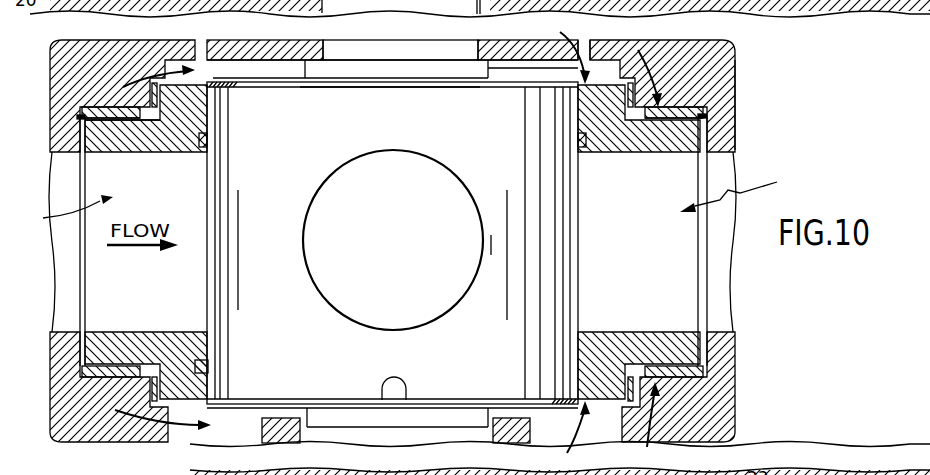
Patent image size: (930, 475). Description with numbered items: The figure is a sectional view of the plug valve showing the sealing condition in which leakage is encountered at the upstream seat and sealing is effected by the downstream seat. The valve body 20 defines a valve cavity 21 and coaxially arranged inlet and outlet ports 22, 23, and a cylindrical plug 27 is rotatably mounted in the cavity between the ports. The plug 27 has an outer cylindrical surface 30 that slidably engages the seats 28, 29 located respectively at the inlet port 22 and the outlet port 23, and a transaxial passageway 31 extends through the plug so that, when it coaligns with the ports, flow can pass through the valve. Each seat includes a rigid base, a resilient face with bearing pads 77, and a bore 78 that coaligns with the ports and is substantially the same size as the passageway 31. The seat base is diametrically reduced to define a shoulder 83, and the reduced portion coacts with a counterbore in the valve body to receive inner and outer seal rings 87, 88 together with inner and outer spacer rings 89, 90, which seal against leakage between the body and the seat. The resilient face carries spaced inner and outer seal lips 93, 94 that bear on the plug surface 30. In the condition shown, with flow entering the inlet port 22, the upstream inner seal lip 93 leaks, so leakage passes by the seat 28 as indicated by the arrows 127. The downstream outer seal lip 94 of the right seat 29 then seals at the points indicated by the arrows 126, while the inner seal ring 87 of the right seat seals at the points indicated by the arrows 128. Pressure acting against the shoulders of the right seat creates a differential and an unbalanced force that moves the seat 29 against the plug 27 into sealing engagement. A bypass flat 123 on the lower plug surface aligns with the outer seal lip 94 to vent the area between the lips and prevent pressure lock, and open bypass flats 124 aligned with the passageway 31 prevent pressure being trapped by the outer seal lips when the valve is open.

The valve body 20 is at (58, 433).
The valve cavity 21 is at (203, 62).
The inlet port 22 is at (60, 308).
The outlet port 23 is at (723, 227).
The plug 27 is at (428, 105).
The seat 28 is at (65, 215).
The seat 29 is at (743, 191).
The outer cylindrical surface 30 is at (245, 273).
The passageway 31 is at (385, 152).
The bearing pads 77 is at (229, 110).
The bore 78 is at (178, 160).
The shoulder 83 is at (690, 92).
The inner seal ring 87 is at (118, 118).
The outer seal ring 88 is at (100, 105).
The inner spacer ring 89 is at (120, 152).
The outer spacer ring 90 is at (77, 117).
The inner seal lip 93 is at (208, 143).
The outer seal lip 94 is at (214, 96).
The bypass flat 123 is at (210, 368).
The open bypass flats 124 is at (400, 386).
The arrows 126 is at (582, 38).
The arrows 127 is at (133, 83).
The arrows 128 is at (658, 42).